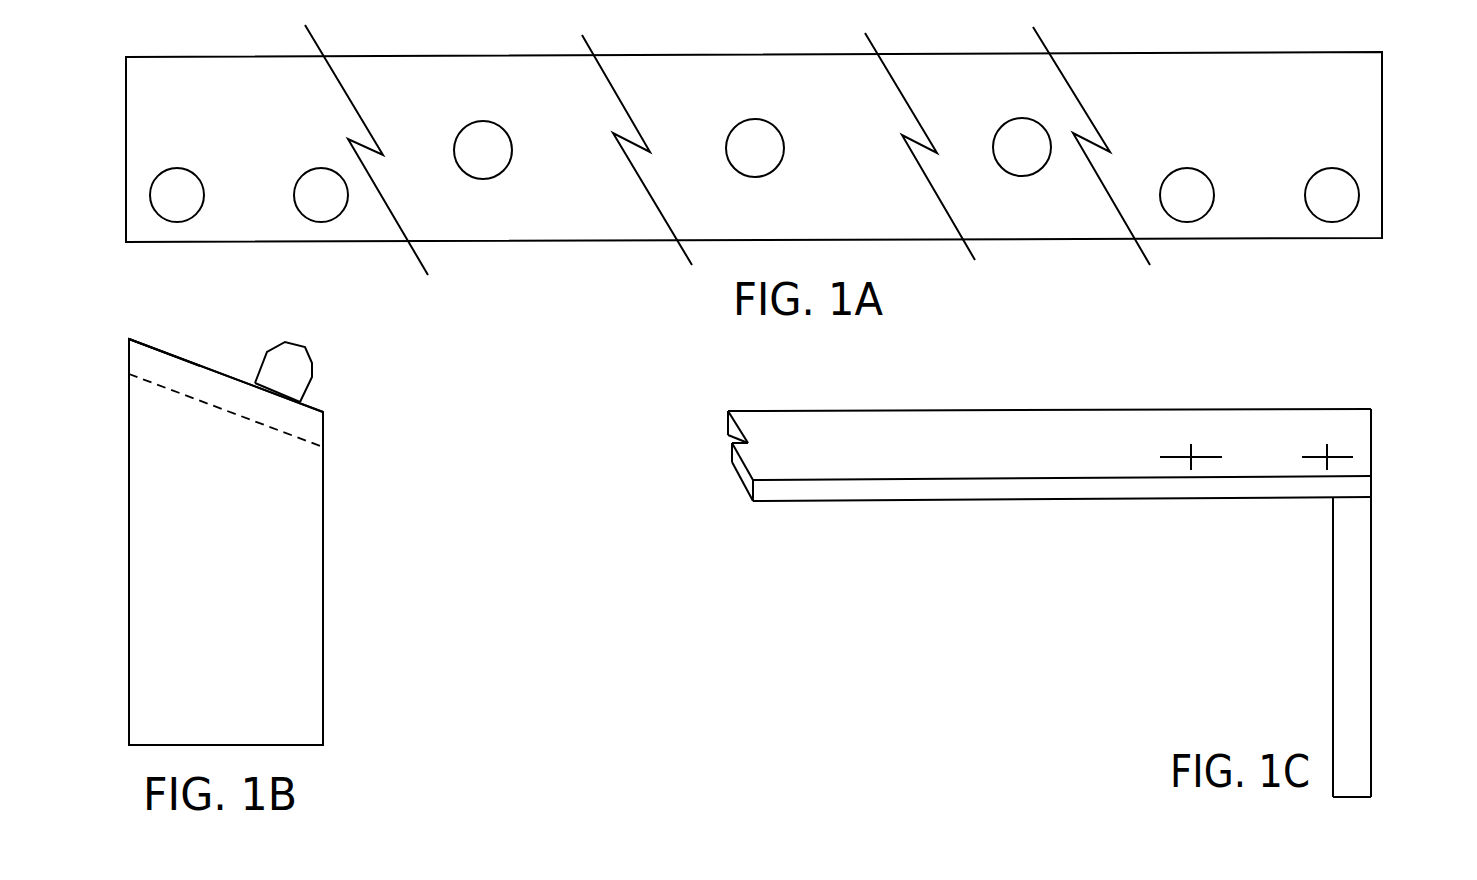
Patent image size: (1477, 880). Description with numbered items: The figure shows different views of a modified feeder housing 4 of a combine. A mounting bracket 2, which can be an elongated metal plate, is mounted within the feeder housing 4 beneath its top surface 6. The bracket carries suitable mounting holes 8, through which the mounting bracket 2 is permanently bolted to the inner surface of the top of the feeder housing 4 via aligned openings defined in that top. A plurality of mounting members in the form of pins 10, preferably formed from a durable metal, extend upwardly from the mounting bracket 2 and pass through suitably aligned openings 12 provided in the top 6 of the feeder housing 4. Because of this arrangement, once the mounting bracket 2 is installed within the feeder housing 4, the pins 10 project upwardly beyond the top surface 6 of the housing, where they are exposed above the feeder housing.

In FIG. 1A, the mounting bracket 2 is at (1382, 170).
In FIG. 1B, the mounting bracket 2 is at (202, 391).
In FIG. 1B, the feeder housing 4 is at (210, 467).
In FIG. 1B, the top surface 6 is at (168, 352).
In FIG. 1A, the mounting holes 8 is at (495, 165).
In FIG. 1A, the pins 10 is at (193, 200).
In FIG. 1B, the pins 10 is at (312, 380).
In FIG. 1B, the openings 12 is at (272, 395).